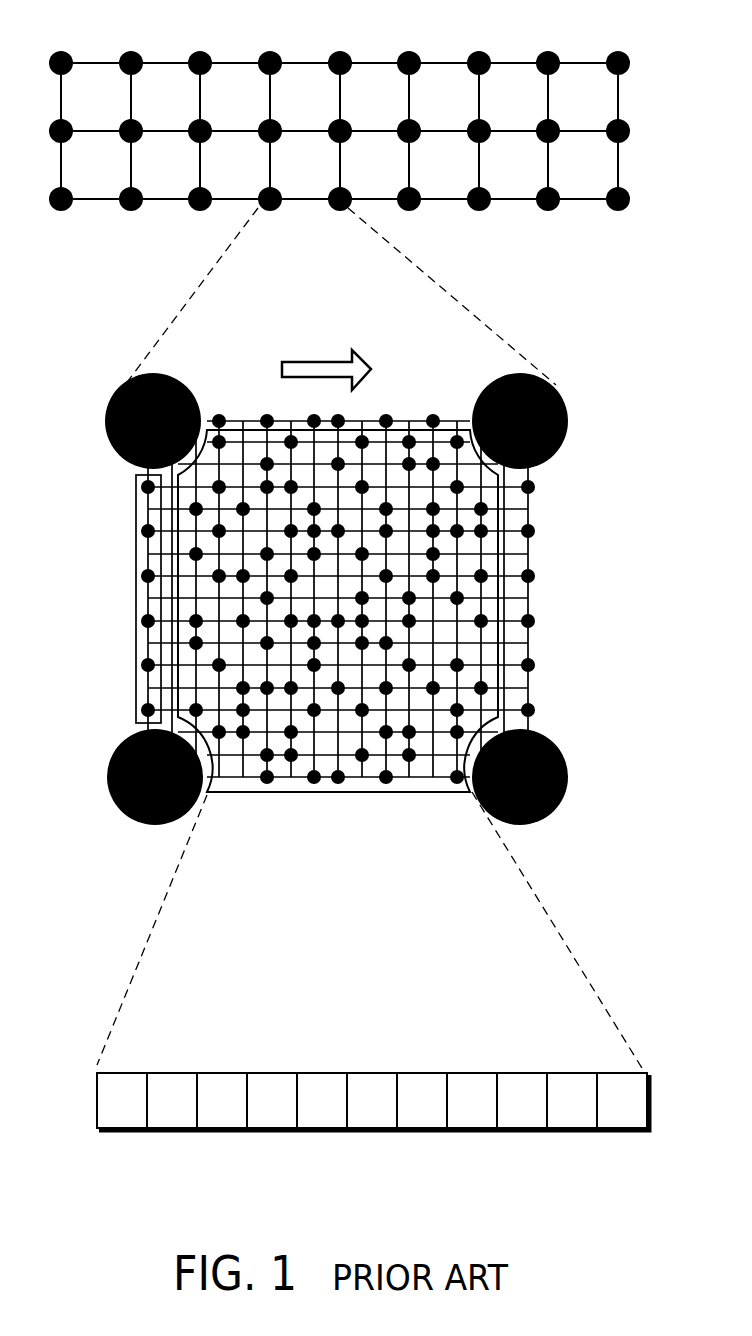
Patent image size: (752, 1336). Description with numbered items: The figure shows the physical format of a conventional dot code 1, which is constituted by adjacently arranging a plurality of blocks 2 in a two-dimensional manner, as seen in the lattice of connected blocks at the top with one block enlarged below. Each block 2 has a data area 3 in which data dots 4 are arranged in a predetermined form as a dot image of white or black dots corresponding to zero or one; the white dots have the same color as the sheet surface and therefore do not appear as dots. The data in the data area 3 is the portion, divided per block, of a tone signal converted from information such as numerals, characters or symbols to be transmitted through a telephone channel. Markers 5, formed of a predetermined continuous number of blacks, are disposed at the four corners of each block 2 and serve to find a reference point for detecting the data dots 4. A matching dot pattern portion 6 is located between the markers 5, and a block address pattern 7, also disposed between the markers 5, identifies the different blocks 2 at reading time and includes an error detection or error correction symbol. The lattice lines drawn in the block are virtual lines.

The dot code 1 is at (417, 51).
The block 2 is at (305, 212).
The data area 3 is at (498, 543).
The data dot 4 is at (460, 663).
The marker 5 is at (572, 772).
The matching dot pattern portion 6 is at (134, 532).
The block address pattern 7 is at (236, 793).